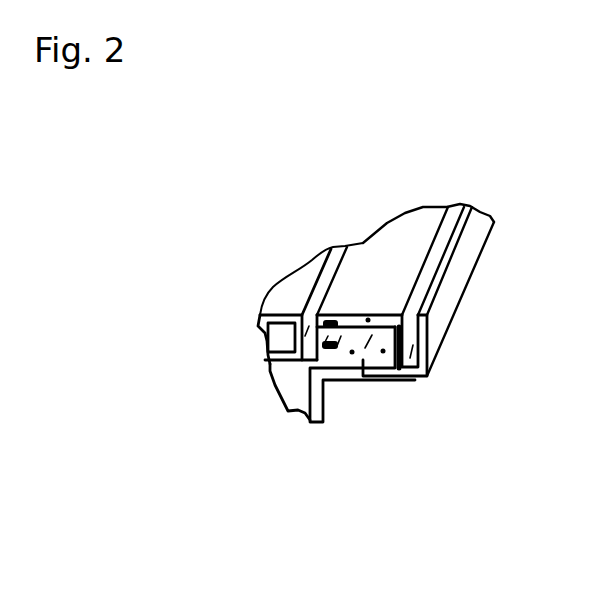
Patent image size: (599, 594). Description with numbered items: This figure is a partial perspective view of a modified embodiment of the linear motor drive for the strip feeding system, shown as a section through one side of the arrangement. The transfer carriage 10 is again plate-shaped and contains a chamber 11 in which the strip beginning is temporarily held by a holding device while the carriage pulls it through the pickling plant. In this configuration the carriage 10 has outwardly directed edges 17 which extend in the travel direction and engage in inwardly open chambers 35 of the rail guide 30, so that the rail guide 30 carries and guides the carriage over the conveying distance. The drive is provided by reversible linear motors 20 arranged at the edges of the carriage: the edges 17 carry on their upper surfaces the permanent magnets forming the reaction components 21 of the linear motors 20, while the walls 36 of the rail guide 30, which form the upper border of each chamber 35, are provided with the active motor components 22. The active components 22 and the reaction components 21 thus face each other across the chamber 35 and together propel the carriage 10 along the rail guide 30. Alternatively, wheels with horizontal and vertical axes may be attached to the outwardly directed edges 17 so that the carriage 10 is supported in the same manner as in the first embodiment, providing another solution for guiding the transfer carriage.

The transfer carriage 10 is at (292, 303).
The chamber 11 is at (278, 337).
The outwardly directed edges 17 is at (383, 352).
The linear motor 20 is at (296, 367).
The reaction components 21 is at (332, 349).
The active motor components 22 is at (331, 322).
The rail guide 30 is at (442, 343).
The inwardly open chambers 35 is at (352, 352).
The walls 36 is at (369, 319).